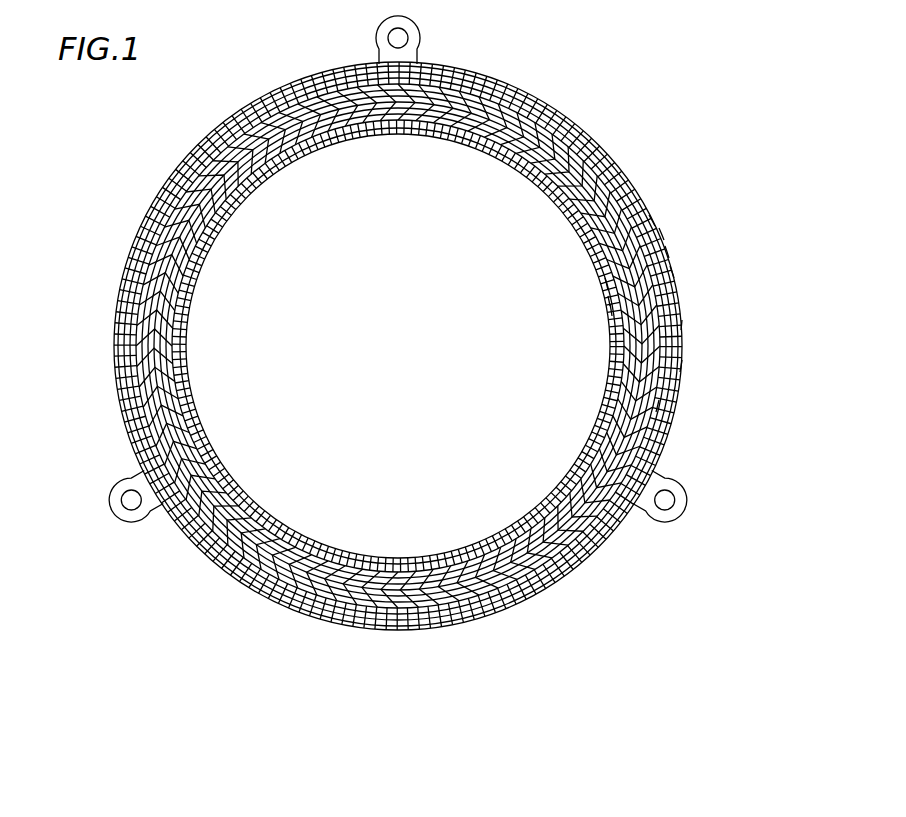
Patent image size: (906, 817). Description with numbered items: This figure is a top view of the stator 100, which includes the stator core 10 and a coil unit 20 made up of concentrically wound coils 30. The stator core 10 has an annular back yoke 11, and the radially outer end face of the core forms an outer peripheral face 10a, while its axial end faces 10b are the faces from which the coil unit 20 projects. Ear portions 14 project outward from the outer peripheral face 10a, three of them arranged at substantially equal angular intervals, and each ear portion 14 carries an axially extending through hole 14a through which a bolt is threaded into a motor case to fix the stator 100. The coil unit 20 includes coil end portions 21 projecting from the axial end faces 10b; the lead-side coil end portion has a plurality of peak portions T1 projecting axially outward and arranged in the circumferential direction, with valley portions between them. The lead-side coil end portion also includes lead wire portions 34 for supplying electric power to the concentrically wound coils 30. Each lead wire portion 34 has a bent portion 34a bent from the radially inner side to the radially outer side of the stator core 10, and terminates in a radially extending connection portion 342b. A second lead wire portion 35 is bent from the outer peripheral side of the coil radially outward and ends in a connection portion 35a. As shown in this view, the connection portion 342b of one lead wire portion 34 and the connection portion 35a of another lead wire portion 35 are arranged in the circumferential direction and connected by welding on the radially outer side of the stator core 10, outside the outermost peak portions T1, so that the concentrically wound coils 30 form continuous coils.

The stator 100 is at (678, 132).
The stator core 10 is at (685, 312).
The back yoke 11 is at (680, 325).
The axial end face 10b is at (683, 365).
The outer peripheral face 10a is at (677, 407).
The ear portion 14 is at (655, 477).
The through hole 14a is at (667, 497).
The coil unit 20 is at (541, 186).
The coil end portion 21 is at (556, 203).
The concentrically wound coil 30 is at (633, 180).
The lead wire portion 35 is at (656, 222).
The lead wire portion 34 is at (667, 235).
The connection portion 35a is at (672, 253).
The connection portion 342b is at (672, 273).
The peak portion T1 is at (610, 283).
The bent portion 34a is at (613, 303).